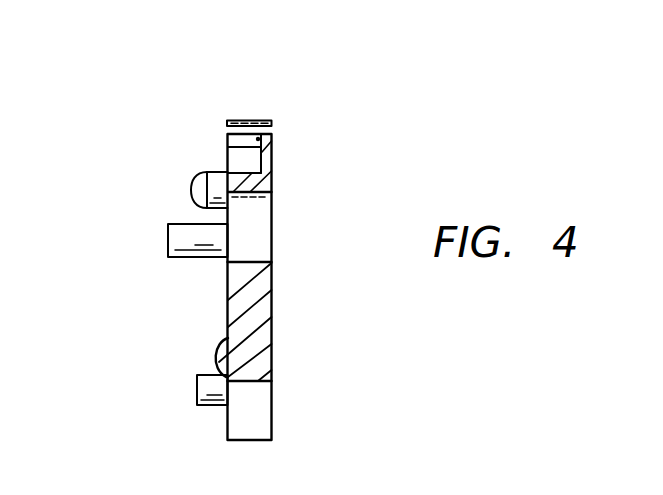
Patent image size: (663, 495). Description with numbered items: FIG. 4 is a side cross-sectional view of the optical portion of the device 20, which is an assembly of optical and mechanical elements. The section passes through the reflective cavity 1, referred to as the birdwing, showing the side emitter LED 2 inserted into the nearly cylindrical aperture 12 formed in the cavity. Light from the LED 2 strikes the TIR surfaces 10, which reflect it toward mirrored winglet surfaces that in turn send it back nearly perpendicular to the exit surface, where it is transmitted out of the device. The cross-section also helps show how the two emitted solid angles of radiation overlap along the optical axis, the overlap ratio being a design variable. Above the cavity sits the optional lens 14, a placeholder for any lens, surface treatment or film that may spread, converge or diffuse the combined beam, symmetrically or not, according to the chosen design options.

The reflective cavity 1 is at (278, 345).
The side emitter LED 2 is at (183, 210).
The TIR surfaces 10 is at (238, 163).
The nearly cylindrical aperture 12 is at (276, 258).
The optional lens 14 is at (250, 112).
The device 20 is at (330, 108).